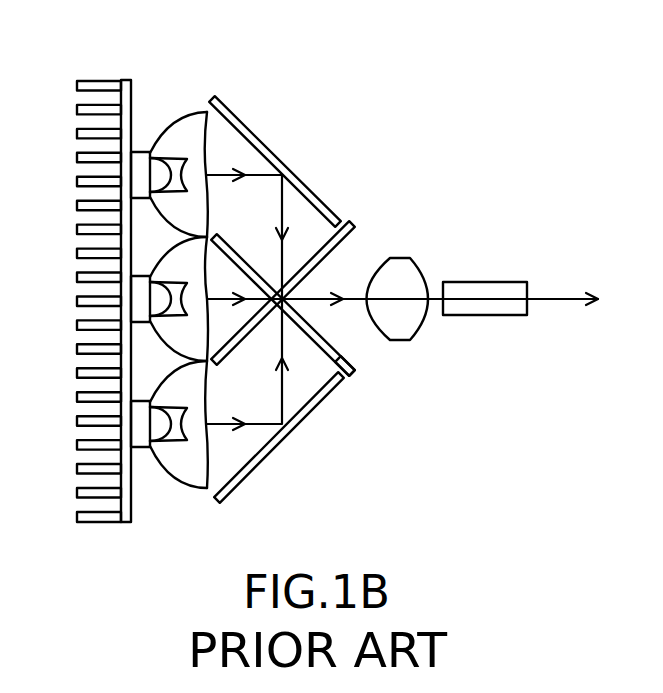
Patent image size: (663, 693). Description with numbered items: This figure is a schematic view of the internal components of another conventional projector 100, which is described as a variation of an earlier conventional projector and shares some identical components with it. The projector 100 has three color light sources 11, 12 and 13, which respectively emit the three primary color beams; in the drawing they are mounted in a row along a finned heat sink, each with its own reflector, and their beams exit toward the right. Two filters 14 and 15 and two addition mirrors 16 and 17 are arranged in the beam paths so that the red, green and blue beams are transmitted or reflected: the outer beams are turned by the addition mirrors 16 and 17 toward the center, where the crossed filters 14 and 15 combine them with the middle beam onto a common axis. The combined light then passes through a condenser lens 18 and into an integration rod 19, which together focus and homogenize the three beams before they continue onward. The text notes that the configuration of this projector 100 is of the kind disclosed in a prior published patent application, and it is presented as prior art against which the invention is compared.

The conventional projector 100 is at (518, 118).
The color light source 11 is at (182, 120).
The color light source 12 is at (167, 275).
The color light source 13 is at (185, 480).
The filter 14 is at (355, 372).
The filter 15 is at (357, 223).
The addition mirror 16 is at (253, 133).
The addition mirror 17 is at (265, 452).
The condenser lens 18 is at (417, 282).
The integration rod 19 is at (487, 295).